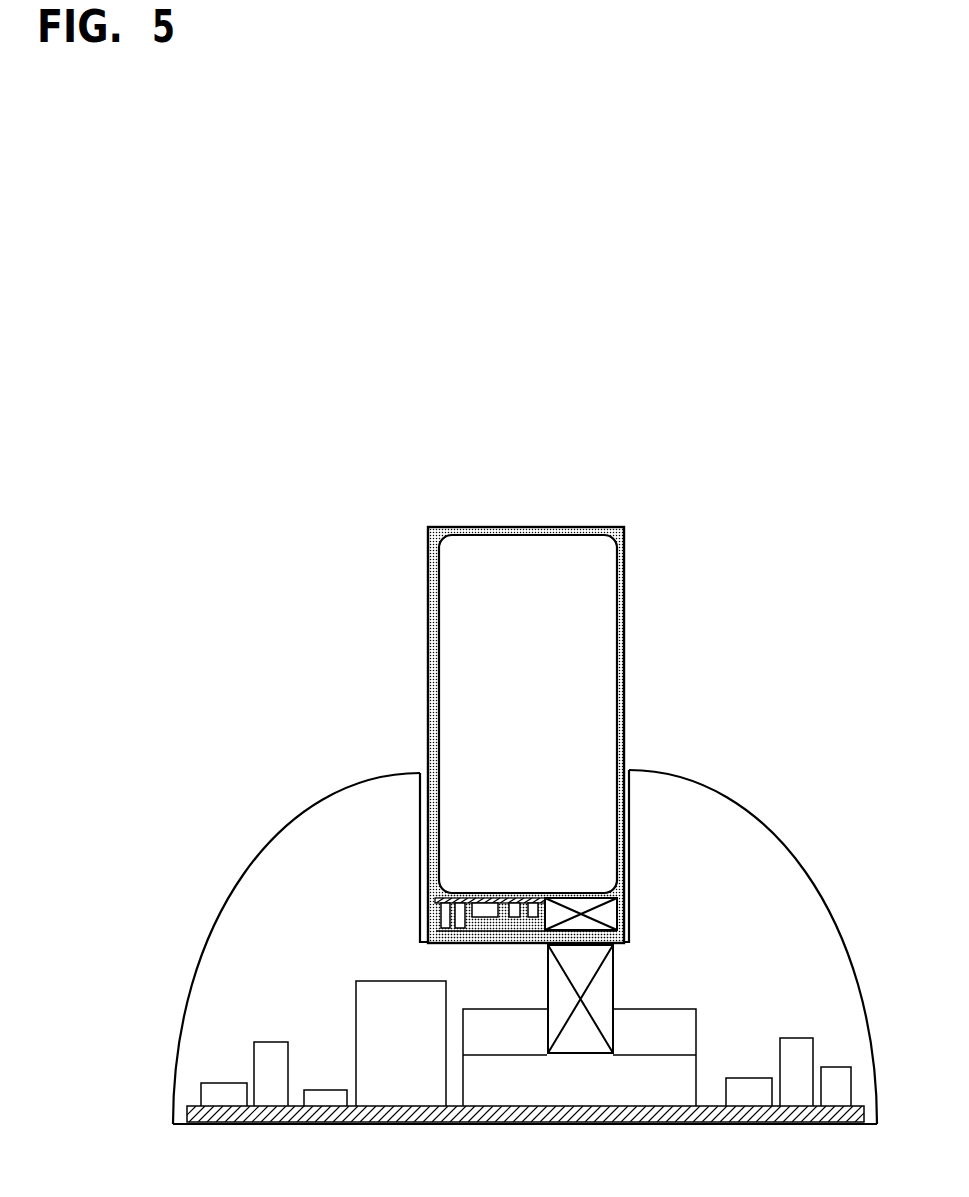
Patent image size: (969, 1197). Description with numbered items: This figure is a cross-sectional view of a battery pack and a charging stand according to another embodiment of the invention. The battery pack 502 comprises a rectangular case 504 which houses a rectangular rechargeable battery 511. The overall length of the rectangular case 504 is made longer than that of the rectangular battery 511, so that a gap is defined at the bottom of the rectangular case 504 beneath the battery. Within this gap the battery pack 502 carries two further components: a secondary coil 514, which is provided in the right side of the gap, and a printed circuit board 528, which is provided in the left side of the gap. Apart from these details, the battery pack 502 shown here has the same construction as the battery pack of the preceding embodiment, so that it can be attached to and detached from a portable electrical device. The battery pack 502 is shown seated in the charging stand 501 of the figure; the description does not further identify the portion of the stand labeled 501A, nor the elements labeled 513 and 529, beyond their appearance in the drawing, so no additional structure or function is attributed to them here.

The charging stand housing 501 is at (831, 960).
The recess of charging stand 501A is at (633, 750).
The battery pack 502 is at (651, 585).
The rectangular case 504 is at (626, 661).
The rectangular rechargeable battery 511 is at (558, 728).
The primary coil 513 is at (607, 992).
The secondary coil 514 is at (603, 911).
The printed circuit board 528 is at (488, 896).
The resin filler 529 is at (425, 933).